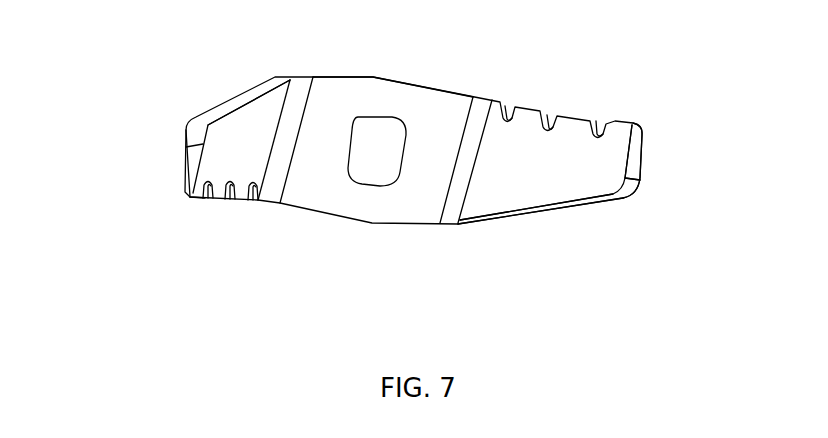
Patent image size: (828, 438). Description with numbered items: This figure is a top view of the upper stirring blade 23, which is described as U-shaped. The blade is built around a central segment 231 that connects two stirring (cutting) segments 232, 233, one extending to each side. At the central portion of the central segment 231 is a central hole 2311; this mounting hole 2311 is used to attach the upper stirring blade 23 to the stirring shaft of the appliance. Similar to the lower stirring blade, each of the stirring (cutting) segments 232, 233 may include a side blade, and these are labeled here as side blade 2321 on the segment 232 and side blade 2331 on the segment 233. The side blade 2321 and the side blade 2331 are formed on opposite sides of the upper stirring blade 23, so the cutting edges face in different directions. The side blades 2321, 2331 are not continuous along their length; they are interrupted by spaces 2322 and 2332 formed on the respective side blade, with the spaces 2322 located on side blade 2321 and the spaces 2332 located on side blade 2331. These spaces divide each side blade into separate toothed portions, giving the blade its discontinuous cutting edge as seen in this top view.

The upper stirring blade 23 is at (402, 173).
The central segment 231 is at (433, 123).
The central hole 2311 is at (382, 136).
The stirring segment 232 is at (245, 120).
The side blade 2321 is at (190, 197).
The space 2322 is at (223, 200).
The stirring segment 233 is at (543, 197).
The side blade 2331 is at (632, 120).
The space 2332 is at (598, 125).